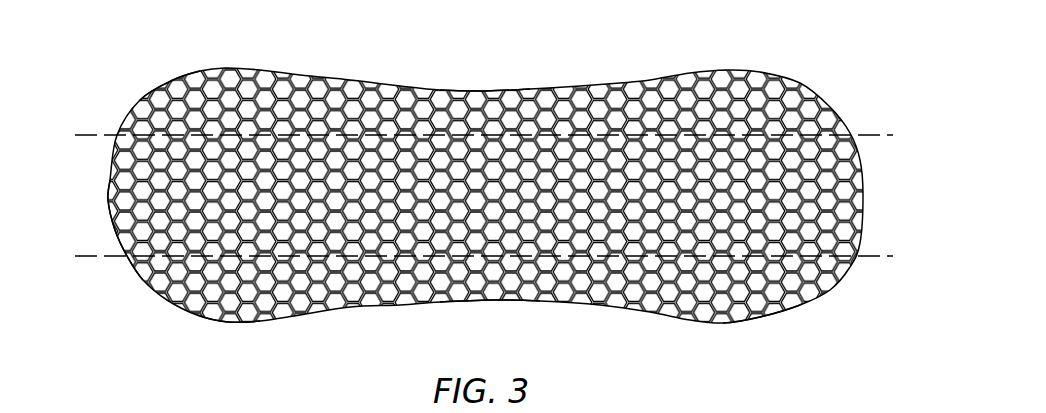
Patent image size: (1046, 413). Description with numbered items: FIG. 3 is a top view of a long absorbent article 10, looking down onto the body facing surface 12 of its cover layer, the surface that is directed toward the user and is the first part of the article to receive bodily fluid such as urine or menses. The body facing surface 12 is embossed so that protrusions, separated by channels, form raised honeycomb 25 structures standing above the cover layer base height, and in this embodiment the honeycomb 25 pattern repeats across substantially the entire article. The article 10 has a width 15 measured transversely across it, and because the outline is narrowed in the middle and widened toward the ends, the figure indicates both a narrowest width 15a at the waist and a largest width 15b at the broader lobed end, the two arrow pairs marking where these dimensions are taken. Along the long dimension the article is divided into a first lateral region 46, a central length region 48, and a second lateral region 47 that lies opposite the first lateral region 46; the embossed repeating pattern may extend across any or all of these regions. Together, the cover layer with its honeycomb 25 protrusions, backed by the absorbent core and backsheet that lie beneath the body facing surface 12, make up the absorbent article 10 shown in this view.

The absorbent article 10 is at (529, 178).
The body facing surface 12 is at (860, 70).
The width 15 is at (318, 202).
The narrowest width 15a is at (486, 92).
The largest width 15b is at (492, 301).
The honeycomb 25 is at (798, 311).
The first lateral region 46 is at (145, 78).
The second lateral region 47 is at (130, 298).
The central length region 48 is at (102, 222).